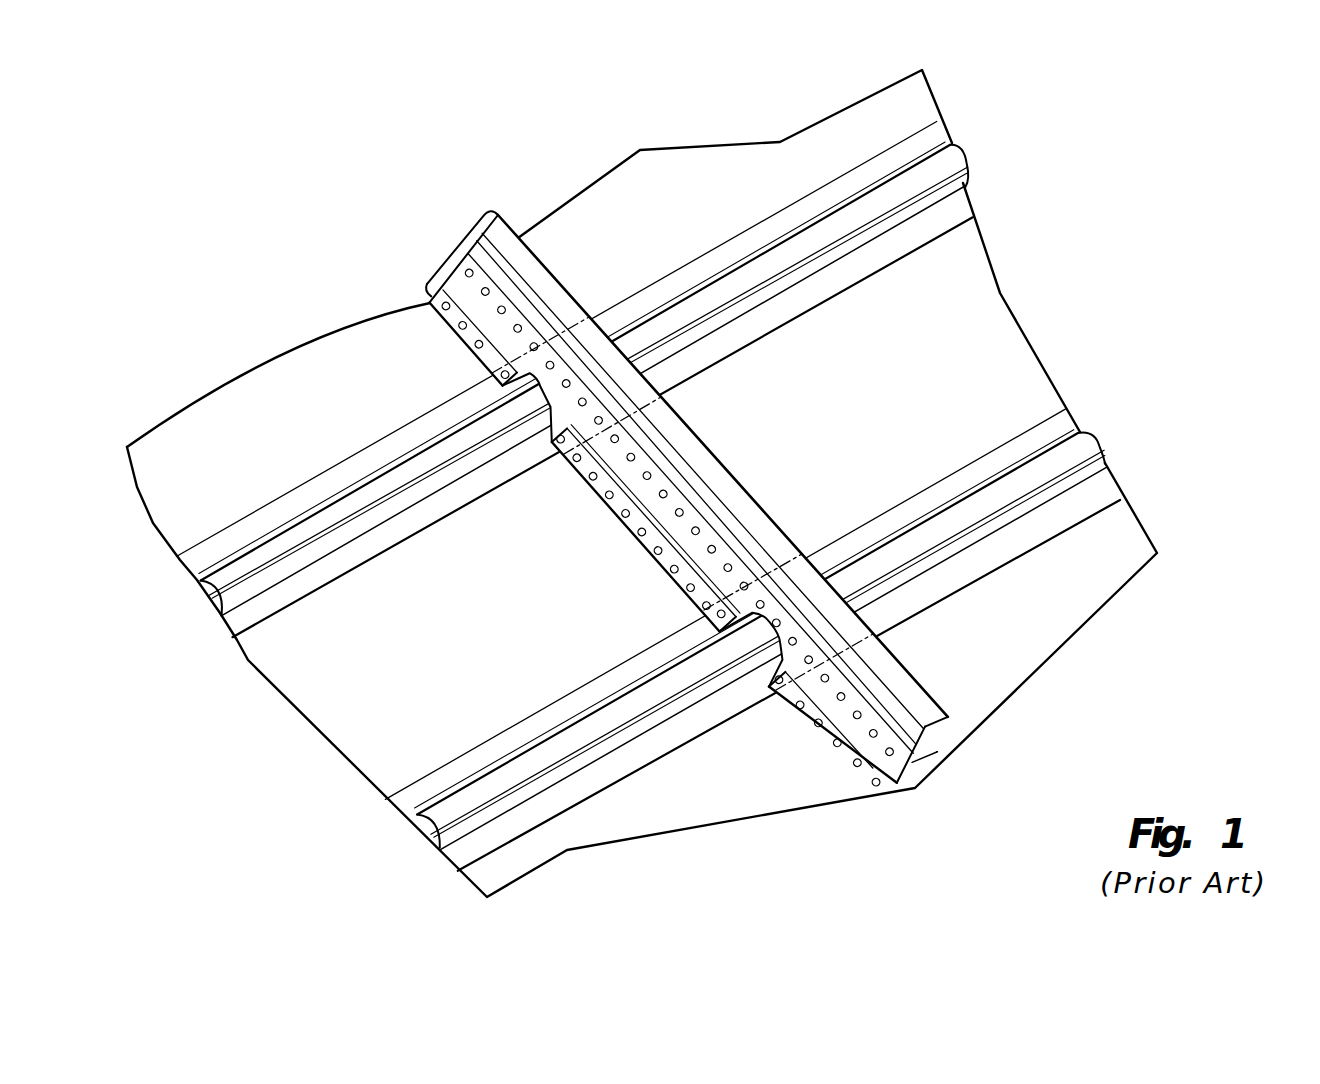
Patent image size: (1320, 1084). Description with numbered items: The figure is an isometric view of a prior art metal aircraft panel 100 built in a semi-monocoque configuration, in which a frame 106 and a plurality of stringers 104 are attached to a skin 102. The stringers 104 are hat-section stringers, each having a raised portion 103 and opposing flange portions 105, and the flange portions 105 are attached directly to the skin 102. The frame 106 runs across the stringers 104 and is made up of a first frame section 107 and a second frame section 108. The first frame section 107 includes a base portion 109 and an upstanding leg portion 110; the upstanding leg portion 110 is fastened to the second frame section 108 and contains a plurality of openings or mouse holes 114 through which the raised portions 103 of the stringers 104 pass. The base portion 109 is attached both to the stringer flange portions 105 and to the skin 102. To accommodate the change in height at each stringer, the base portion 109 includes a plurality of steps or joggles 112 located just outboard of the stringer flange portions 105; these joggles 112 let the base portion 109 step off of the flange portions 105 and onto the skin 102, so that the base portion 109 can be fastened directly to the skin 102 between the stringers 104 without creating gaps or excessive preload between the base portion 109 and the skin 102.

The metal aircraft panel 100 is at (660, 483).
The skin 102 is at (1067, 597).
The raised portion 103 is at (965, 163).
The stringers 104 is at (923, 247).
The flange portions 105 is at (858, 178).
The frame 106 is at (434, 284).
The first frame section 107 is at (912, 765).
The second frame section 108 is at (950, 726).
The base portion 109 is at (832, 730).
The upstanding leg portion 110 is at (674, 519).
The joggles 112 is at (480, 363).
The mouse holes 114 is at (540, 380).